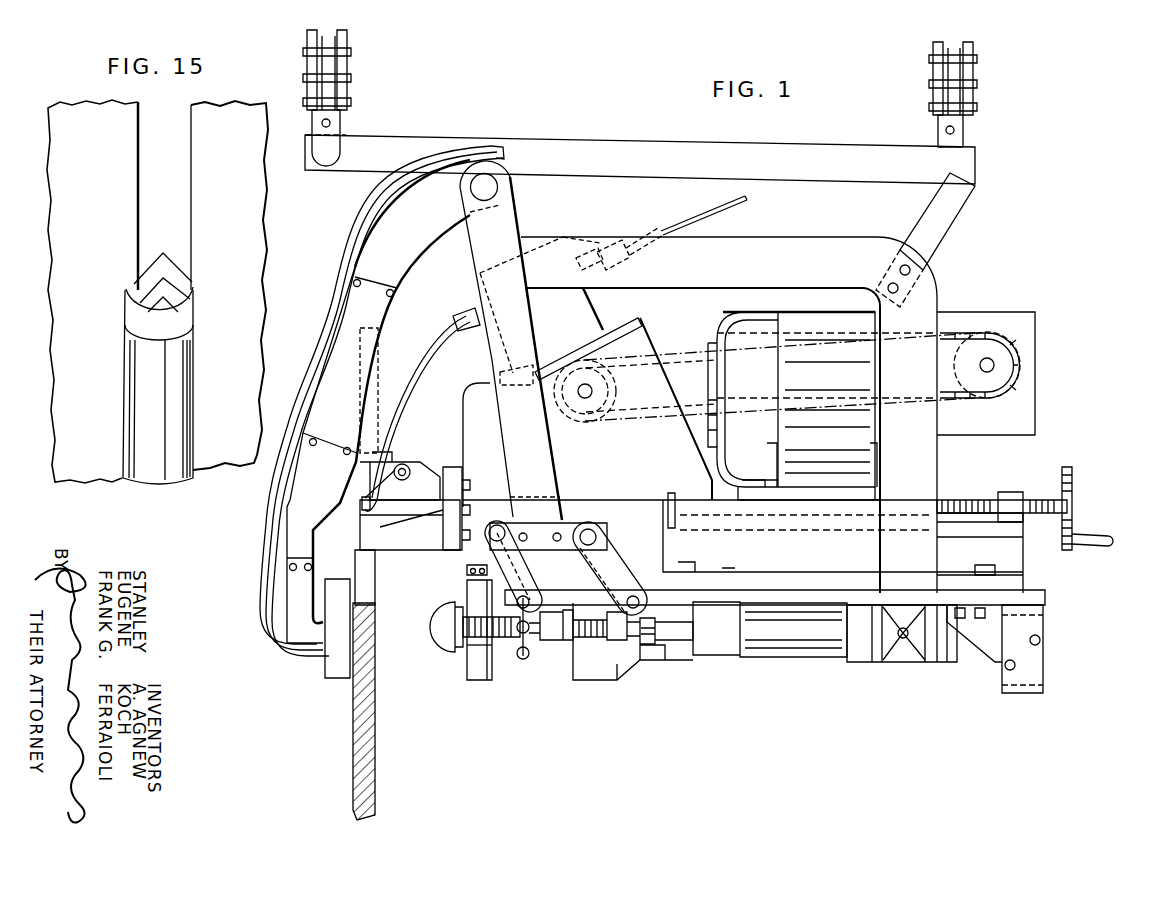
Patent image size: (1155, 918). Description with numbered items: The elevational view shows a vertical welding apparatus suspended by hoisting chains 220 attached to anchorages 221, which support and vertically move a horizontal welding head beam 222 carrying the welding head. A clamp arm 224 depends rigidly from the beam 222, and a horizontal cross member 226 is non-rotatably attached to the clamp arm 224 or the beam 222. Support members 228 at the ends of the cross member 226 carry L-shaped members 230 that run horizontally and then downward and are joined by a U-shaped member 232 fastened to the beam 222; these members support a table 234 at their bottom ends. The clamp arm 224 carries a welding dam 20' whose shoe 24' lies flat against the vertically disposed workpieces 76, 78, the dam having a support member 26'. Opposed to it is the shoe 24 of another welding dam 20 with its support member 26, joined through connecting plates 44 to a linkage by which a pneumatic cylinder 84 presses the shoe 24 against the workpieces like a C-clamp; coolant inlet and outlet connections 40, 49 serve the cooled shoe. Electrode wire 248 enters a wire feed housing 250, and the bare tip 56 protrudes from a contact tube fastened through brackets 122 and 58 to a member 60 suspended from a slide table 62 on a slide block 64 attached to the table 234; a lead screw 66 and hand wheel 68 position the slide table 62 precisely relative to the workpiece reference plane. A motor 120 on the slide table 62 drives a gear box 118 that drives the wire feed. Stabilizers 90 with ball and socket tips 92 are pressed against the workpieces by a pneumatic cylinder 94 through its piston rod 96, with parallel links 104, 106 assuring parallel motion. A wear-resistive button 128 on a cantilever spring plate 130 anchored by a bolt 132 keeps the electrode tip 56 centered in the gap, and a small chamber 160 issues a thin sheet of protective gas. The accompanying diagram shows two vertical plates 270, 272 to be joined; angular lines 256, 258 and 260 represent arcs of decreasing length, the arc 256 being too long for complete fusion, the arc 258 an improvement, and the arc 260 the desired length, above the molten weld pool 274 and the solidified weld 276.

In FIG. 1, the welding dam 20 is at (464, 696).
In FIG. 1, the welding dam 20' is at (314, 645).
In FIG. 1, the shoe 24 is at (460, 715).
In FIG. 1, the shoe 24' is at (324, 708).
In FIG. 1, the support member 26 is at (501, 684).
In FIG. 1, the support member 26' is at (291, 672).
In FIG. 1, the coolant inlet connection 40 is at (472, 595).
In FIG. 1, the connecting plate 44 is at (532, 660).
In FIG. 1, the coolant outlet connection 49 is at (497, 672).
In FIG. 1, the electrode tip 56 is at (347, 550).
In FIG. 1, the bracket 58 is at (462, 507).
In FIG. 1, the member 60 is at (603, 466).
In FIG. 1, the slide table 62 is at (820, 515).
In FIG. 1, the slide block 64 is at (1015, 562).
In FIG. 1, the lead screw 66 is at (960, 500).
In FIG. 1, the hand wheel 68 is at (1072, 525).
In FIG. 1, the workpiece 76 is at (375, 580).
In FIG. 1, the workpiece 78 is at (342, 790).
In FIG. 1, the pneumatic cylinder 84 is at (712, 662).
In FIG. 1, the stabilizer 90 is at (465, 660).
In FIG. 1, the ball and socket tip 92 is at (428, 627).
In FIG. 1, the pneumatic cylinder 94 is at (797, 660).
In FIG. 1, the piston rod 96 is at (668, 642).
In FIG. 1, the parallel link 104 is at (520, 562).
In FIG. 1, the parallel link 106 is at (608, 572).
In FIG. 1, the gear box 118 is at (1040, 324).
In FIG. 1, the motor 120 is at (800, 396).
In FIG. 1, the bracket 122 is at (400, 545).
In FIG. 1, the wear-resistive button 128 is at (347, 485).
In FIG. 1, the cantilever spring plate 130 is at (411, 478).
In FIG. 1, the bolt 132 is at (412, 462).
In FIG. 1, the small chamber 160 is at (470, 564).
In FIG. 1, the chain 220 is at (349, 62).
In FIG. 1, the anchorage 221 is at (341, 128).
In FIG. 1, the welding head beam 222 is at (678, 147).
In FIG. 1, the clamp arm 224 is at (307, 482).
In FIG. 1, the horizontal cross member 226 is at (497, 187).
In FIG. 1, the support member 228 is at (497, 243).
In FIG. 1, the L-shaped member 230 is at (818, 250).
In FIG. 1, the U-shaped member 232 is at (944, 228).
In FIG. 1, the table 234 is at (1045, 601).
In FIG. 1, the electrode wire 248 is at (703, 213).
In FIG. 1, the wire feed housing 250 is at (598, 322).
In FIG. 15, the arc outline 256 is at (176, 266).
In FIG. 15, the arc outline 258 is at (178, 288).
In FIG. 15, the arc outline 260 is at (181, 300).
In FIG. 15, the vertical plate 270 is at (77, 167).
In FIG. 15, the vertical plate 272 is at (212, 167).
In FIG. 15, the molten weld pool 274 is at (185, 322).
In FIG. 15, the solidified weld 276 is at (173, 395).